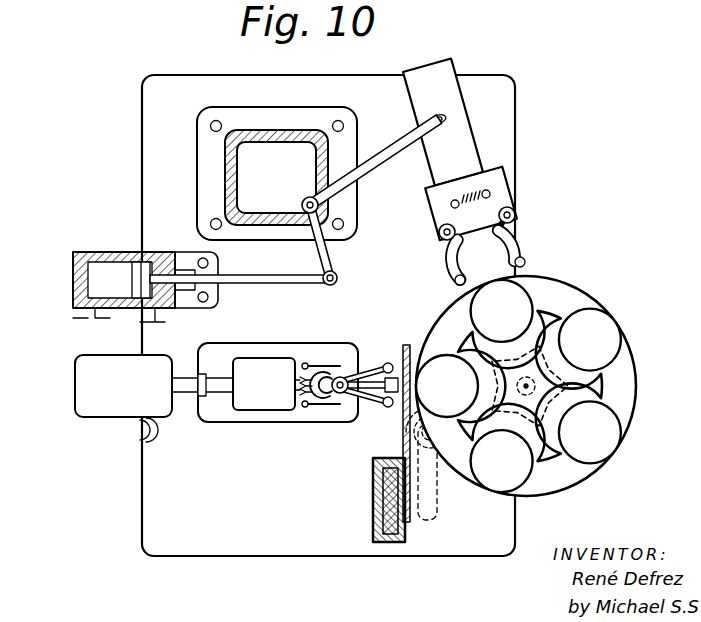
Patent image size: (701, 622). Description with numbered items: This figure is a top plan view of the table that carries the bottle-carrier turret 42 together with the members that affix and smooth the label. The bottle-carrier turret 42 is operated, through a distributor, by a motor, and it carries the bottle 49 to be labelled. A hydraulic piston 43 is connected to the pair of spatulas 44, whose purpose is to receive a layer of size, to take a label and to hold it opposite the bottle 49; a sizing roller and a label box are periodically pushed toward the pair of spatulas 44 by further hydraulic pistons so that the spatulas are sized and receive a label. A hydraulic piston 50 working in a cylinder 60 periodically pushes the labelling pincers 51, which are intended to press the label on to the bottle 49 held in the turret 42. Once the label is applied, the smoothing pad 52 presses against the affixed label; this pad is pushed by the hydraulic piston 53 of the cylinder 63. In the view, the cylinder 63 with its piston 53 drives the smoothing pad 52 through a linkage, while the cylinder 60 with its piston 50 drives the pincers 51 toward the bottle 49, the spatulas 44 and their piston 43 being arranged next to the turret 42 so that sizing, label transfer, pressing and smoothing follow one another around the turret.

The bottle-carrier turret 42 is at (563, 287).
The hydraulic piston 43 is at (457, 473).
The pair of spatulas 44 is at (400, 426).
The bottle 49 is at (452, 462).
The hydraulic piston 50 is at (185, 387).
The labelling pincers 51 is at (340, 418).
The smoothing pad 52 is at (500, 242).
The hydraulic piston 53 is at (140, 270).
The cylinder 60 is at (102, 417).
The cylinder 63 is at (73, 280).